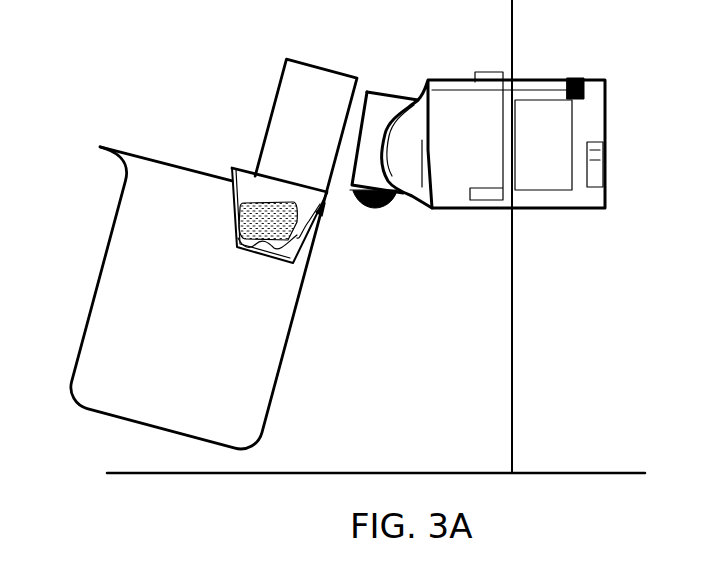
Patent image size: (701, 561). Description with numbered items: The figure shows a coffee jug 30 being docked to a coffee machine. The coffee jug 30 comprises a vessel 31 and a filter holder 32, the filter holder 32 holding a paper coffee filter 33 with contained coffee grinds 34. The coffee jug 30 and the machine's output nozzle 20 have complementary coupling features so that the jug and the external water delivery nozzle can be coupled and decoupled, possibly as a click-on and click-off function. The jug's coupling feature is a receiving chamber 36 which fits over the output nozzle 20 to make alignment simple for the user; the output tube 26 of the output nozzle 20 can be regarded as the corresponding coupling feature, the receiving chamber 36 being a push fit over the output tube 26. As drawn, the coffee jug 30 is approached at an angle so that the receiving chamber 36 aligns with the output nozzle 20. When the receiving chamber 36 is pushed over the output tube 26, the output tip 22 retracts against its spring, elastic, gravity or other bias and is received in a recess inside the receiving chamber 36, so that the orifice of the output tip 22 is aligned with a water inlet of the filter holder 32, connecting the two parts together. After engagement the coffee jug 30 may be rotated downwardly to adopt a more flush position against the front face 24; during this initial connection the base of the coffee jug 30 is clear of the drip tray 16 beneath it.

The drip tray 16 is at (340, 472).
The output nozzle 20 is at (585, 55).
The output tip 22 is at (378, 211).
The front face 24 is at (510, 382).
The output tube 26 is at (389, 93).
The coffee jug 30 is at (62, 130).
The vessel 31 is at (90, 316).
The filter holder 32 is at (272, 263).
The paper coffee filter 33 is at (247, 247).
The coffee grinds 34 is at (253, 200).
The receiving chamber 36 is at (334, 70).